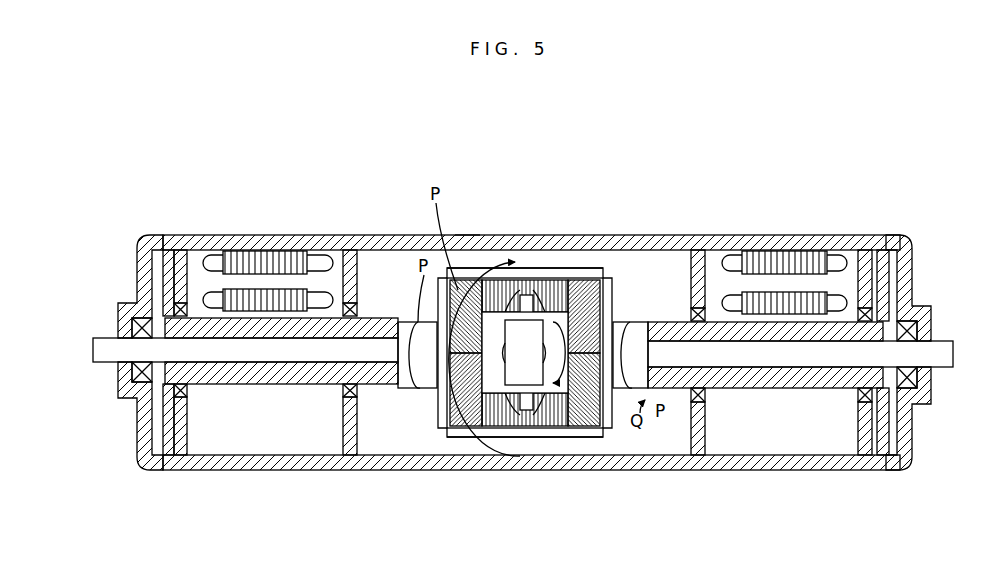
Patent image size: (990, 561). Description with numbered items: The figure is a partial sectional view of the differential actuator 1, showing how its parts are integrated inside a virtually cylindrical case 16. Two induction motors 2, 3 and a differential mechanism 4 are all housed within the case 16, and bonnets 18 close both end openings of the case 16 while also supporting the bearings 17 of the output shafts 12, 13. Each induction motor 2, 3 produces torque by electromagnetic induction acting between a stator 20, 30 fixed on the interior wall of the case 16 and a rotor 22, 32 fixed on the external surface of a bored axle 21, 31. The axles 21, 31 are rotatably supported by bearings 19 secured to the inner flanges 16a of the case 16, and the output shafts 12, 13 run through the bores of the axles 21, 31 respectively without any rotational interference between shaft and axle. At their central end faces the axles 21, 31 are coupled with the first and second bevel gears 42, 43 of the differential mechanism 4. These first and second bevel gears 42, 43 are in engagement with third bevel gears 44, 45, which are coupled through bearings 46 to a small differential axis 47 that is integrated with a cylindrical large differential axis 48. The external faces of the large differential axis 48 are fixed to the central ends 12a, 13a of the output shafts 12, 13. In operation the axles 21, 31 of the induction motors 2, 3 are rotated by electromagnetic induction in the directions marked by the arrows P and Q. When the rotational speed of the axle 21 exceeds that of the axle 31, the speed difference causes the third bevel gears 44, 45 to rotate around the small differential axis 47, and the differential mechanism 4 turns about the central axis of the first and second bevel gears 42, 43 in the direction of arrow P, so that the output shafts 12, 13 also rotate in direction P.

The differential actuator 1 is at (386, 243).
The induction motor 2 is at (270, 283).
The induction motor 3 is at (786, 288).
The differential mechanism 4 is at (568, 262).
The output shaft 12 is at (100, 345).
The central end of output shaft 12a is at (503, 352).
The output shaft 13 is at (940, 350).
The central end of output shaft 13a is at (560, 400).
The case 16 is at (466, 248).
The inner flange 16a is at (168, 268).
The bearing 17 is at (140, 330).
The bonnet 18 is at (142, 240).
The bearing 19 is at (150, 262).
The stator 20 is at (292, 262).
The axle 21 is at (430, 318).
The rotor 22 is at (215, 325).
The stator 30 is at (752, 260).
The axle 31 is at (629, 320).
The rotor 32 is at (830, 322).
The first bevel gear 42 is at (456, 404).
The second bevel gear 43 is at (603, 420).
The third bevel gear 44 is at (600, 284).
The third bevel gear 45 is at (460, 438).
The bearing 46 is at (502, 292).
The small differential axis 47 is at (527, 296).
The large differential axis 48 is at (527, 388).